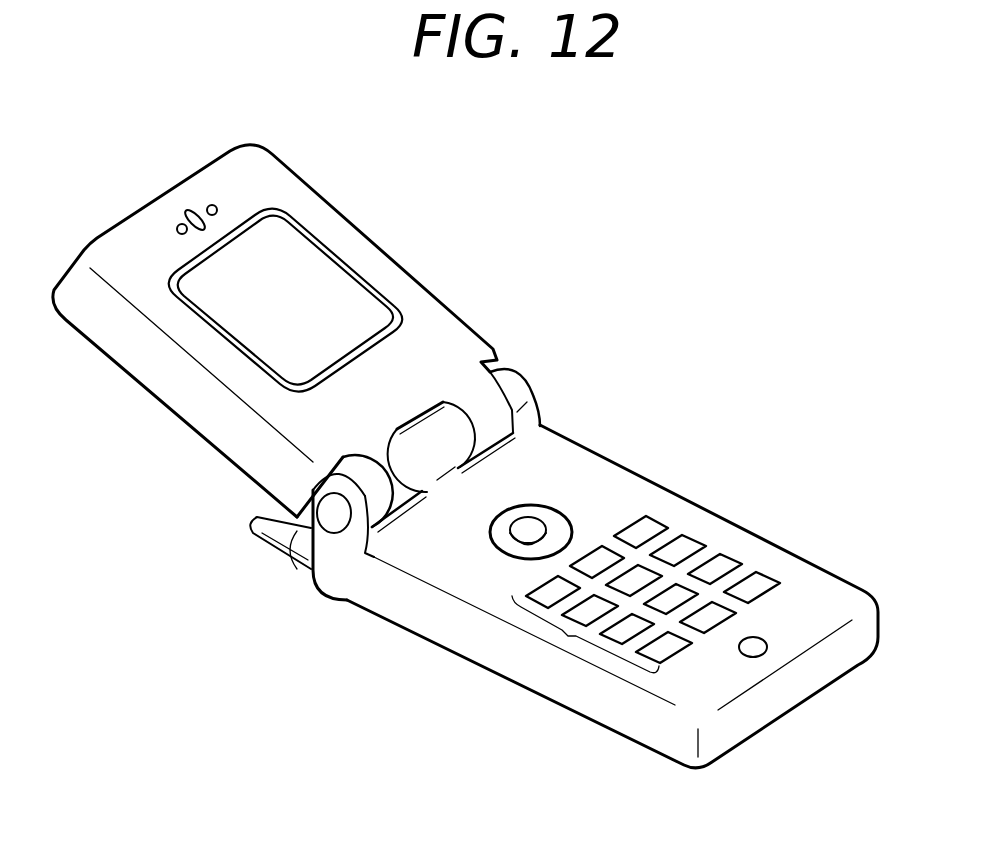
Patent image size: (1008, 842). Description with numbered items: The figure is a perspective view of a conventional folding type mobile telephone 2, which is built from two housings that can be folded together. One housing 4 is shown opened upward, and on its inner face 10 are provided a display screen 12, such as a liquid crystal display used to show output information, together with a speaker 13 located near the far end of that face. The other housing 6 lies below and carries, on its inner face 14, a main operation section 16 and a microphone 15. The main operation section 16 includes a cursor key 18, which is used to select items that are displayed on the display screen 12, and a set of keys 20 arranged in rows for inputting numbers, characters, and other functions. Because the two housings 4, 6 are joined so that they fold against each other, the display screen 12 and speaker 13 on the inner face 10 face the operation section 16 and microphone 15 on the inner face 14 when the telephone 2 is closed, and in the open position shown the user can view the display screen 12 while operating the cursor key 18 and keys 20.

The folding type mobile telephone 2 is at (165, 578).
The housing 4 is at (187, 408).
The housing 6 is at (470, 640).
The inner face 10 is at (430, 340).
The display screen 12 is at (305, 277).
The speaker 13 is at (197, 215).
The inner face 14 is at (613, 500).
The microphone 15 is at (767, 645).
The main operation section 16 is at (810, 545).
The cursor key 18 is at (533, 533).
The keys 20 is at (570, 637).